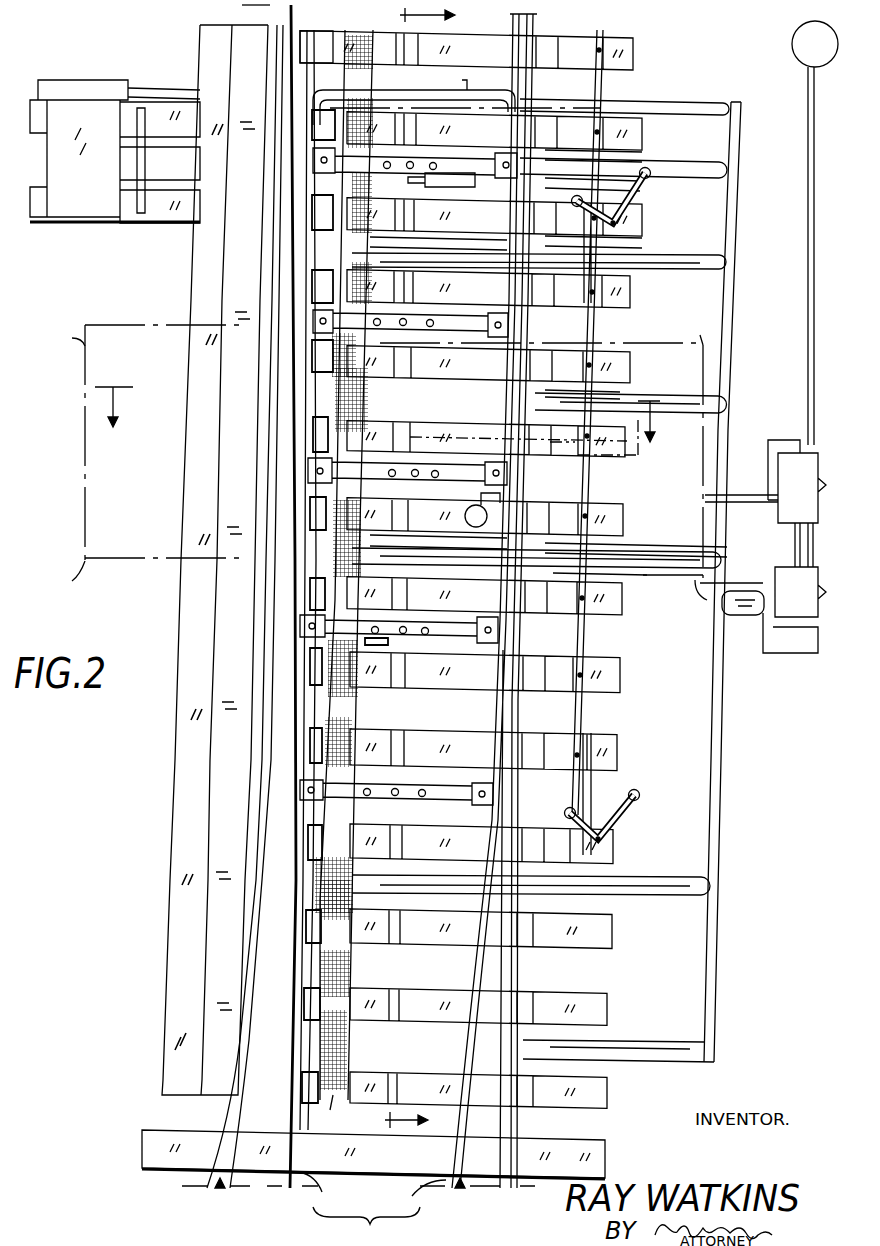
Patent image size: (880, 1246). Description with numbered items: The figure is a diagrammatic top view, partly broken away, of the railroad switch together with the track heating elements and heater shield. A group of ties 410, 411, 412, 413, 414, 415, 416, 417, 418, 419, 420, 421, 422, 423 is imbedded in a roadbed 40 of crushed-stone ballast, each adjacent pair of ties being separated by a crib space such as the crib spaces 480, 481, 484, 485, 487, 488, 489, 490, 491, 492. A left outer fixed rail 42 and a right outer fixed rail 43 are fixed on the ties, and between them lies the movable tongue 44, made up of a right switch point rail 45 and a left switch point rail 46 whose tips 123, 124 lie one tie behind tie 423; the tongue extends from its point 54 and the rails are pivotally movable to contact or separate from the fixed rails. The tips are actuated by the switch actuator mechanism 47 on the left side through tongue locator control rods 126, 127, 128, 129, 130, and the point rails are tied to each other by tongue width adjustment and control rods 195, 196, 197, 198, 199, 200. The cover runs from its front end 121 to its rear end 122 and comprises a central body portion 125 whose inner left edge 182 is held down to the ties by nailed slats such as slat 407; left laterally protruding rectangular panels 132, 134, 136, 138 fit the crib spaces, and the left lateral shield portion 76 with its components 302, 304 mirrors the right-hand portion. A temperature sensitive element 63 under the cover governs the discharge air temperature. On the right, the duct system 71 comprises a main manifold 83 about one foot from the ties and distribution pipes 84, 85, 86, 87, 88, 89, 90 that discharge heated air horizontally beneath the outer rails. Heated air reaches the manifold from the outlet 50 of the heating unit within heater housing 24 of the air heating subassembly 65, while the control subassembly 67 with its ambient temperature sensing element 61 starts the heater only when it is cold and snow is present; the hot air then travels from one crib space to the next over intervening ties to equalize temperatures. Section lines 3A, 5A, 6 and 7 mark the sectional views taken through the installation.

The left lateral shield portion component 302 is at (177, 752).
The left lateral shield portion component 304 is at (225, 772).
The switch actuator mechanism 47 is at (78, 92).
The tongue locator control rod 126 is at (185, 85).
The tip of switch rail 46 124 is at (300, 69).
The left outer fixed rail 42 is at (228, 1119).
The right outer fixed rail 43 is at (516, 1122).
The movable tongue 44 is at (366, 1224).
The right switch point rail 45 is at (415, 1196).
The left switch point rail 46 is at (318, 1192).
The roadbed 40 is at (352, 1120).
The front end of cover 121 is at (364, 35).
The rear end of cover 122 is at (319, 1113).
The central body portion of cover 125 is at (352, 712).
The tie 423 is at (633, 38).
The tie 422 is at (642, 137).
The tie 421 is at (640, 225).
The tie 420 is at (627, 300).
The tie 419 is at (633, 372).
The tie 418 is at (428, 425).
The tie 417 is at (620, 520).
The tie 416 is at (616, 605).
The tie 415 is at (618, 680).
The tie 414 is at (618, 752).
The tie 413 is at (615, 848).
The tie 412 is at (609, 928).
The tie 411 is at (605, 1008).
The tie 410 is at (605, 1093).
The crib space 492 is at (620, 87).
The crib space 491 is at (630, 155).
The crib space 490 is at (630, 247).
The crib space 489 is at (605, 327).
The crib space 488 is at (457, 401).
The crib space 487 is at (592, 480).
The crib space 485 is at (592, 640).
The crib space 484 is at (439, 711).
The crib space 481 is at (437, 967).
The crib space 480 is at (416, 1044).
The distribution pipe 90 is at (692, 100).
The distribution pipe 89 is at (690, 172).
The distribution pipe 88 is at (710, 268).
The distribution pipe 87 is at (673, 411).
The distribution pipe 86 is at (683, 552).
The distribution pipe 85 is at (698, 890).
The distribution pipe 84 is at (676, 1051).
The main manifold 83 is at (735, 347).
The duct system 71 is at (722, 784).
The point of switch tongue 54 is at (438, 91).
The tongue width adjustment and control rod 200 is at (453, 92).
The tip of switch rail 45 123 is at (520, 101).
The tongue width adjustment and control rod 199 is at (466, 165).
The tongue locator control rod 127 is at (420, 181).
The tongue width adjustment and control rod 198 is at (452, 322).
The tongue width adjustment and control rod 197 is at (362, 470).
The tongue width adjustment and control rod 196 is at (460, 627).
The tongue width adjustment and control rod 195 is at (455, 792).
The temperature sensitive element 63 is at (464, 517).
The inner left edge of central cover body portion 182 is at (370, 418).
The slat 407 is at (318, 433).
The tongue locator control rod 129 is at (578, 714).
The tongue locator control rod 128 is at (640, 194).
The tongue locator control rod 130 is at (608, 790).
The temperature sensing element 61 is at (792, 46).
The heater housing 24 is at (784, 446).
The control subassembly 67 is at (765, 510).
The air heating subassembly 65 is at (794, 610).
The outlet of heating unit 50 is at (758, 615).
The section line 3A is at (383, 463).
The section line 5A is at (412, 343).
The section line 6 is at (377, 426).
The section line 7 is at (429, 568).
The left laterally protruding rectangular panel 132 is at (300, 395).
The left lateral shield portion 76 is at (192, 426).
The left laterally protruding rectangular panel 134 is at (312, 475).
The left laterally protruding rectangular panel 136 is at (300, 552).
The left laterally protruding rectangular panel 138 is at (300, 630).